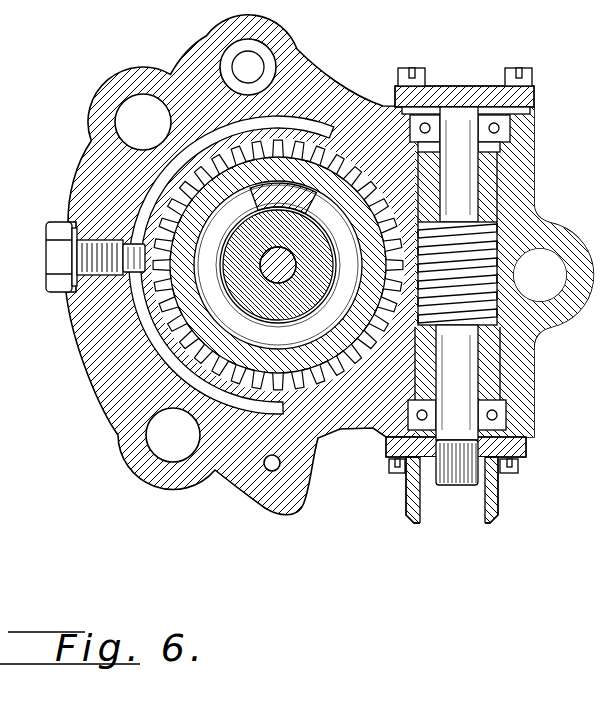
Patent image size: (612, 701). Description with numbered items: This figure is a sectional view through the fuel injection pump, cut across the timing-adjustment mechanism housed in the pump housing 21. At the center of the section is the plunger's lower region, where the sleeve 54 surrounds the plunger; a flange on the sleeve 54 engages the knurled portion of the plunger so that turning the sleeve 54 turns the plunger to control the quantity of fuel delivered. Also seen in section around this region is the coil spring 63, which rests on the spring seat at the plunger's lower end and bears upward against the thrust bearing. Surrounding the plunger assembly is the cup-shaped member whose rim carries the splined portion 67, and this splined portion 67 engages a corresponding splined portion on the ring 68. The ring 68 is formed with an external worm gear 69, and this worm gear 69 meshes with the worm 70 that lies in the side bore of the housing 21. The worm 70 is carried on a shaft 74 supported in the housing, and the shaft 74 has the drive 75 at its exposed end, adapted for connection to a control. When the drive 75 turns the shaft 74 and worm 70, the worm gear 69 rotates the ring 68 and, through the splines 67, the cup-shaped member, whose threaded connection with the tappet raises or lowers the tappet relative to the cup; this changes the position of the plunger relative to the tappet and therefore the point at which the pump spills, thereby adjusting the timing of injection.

The pump housing 21 is at (147, 370).
The sleeve 54 is at (235, 283).
The coil spring 63 is at (232, 226).
The splined portion 67 is at (222, 188).
The ring 68 is at (223, 153).
The external worm gear 69 is at (318, 130).
The worm 70 is at (466, 240).
The shaft 74 is at (482, 177).
The drive 75 is at (463, 468).